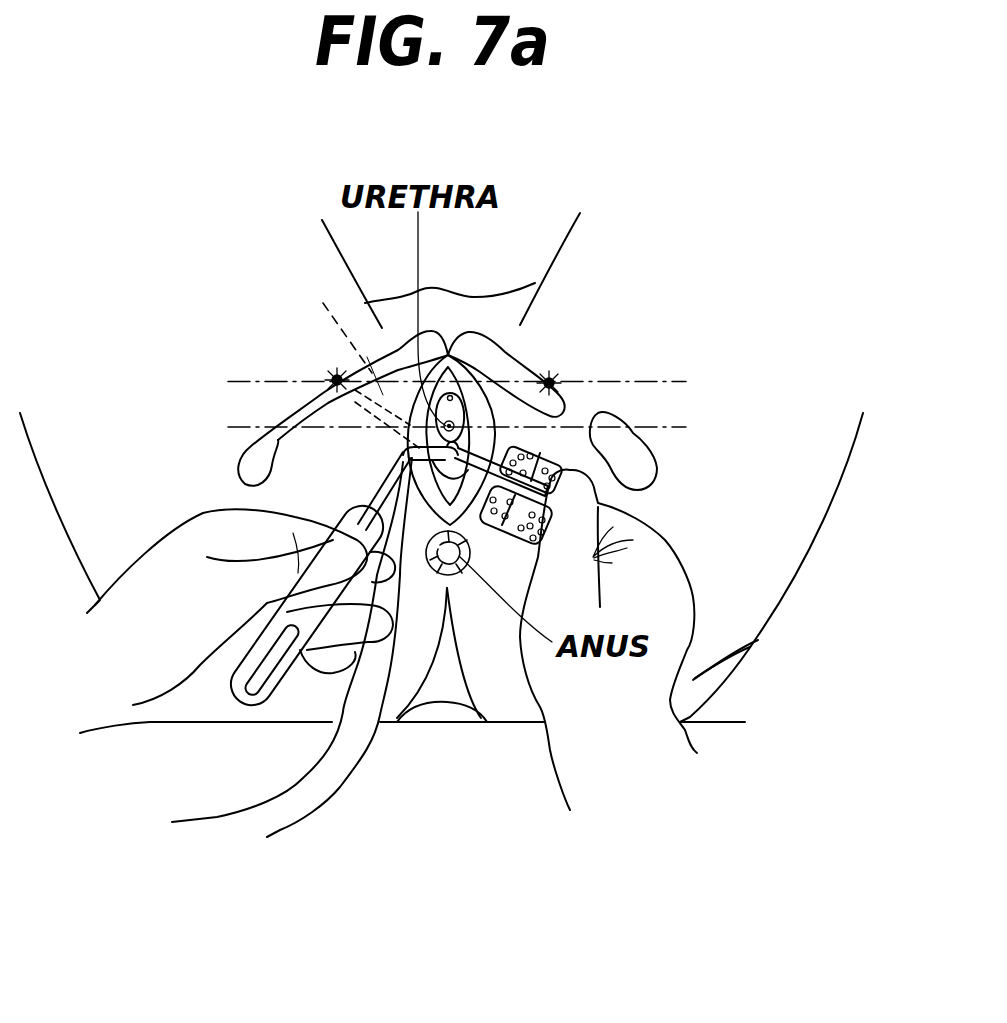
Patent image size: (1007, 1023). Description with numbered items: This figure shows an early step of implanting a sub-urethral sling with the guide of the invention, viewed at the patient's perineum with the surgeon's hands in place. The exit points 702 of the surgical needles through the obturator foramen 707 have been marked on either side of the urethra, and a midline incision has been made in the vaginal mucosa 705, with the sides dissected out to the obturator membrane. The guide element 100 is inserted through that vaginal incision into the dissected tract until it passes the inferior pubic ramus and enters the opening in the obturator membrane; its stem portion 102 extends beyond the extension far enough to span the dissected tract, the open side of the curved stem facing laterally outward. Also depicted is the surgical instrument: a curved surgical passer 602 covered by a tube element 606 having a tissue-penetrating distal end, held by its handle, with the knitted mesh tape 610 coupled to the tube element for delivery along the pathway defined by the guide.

The guide element 100 is at (552, 455).
The stem portion 102 is at (355, 357).
The surgical passer 602 is at (396, 480).
The tube element 606 is at (393, 512).
The tape 610 is at (317, 795).
The exit point 702 is at (337, 377).
The vaginal mucosa 705 is at (458, 425).
The obturator foramen 707 is at (317, 400).